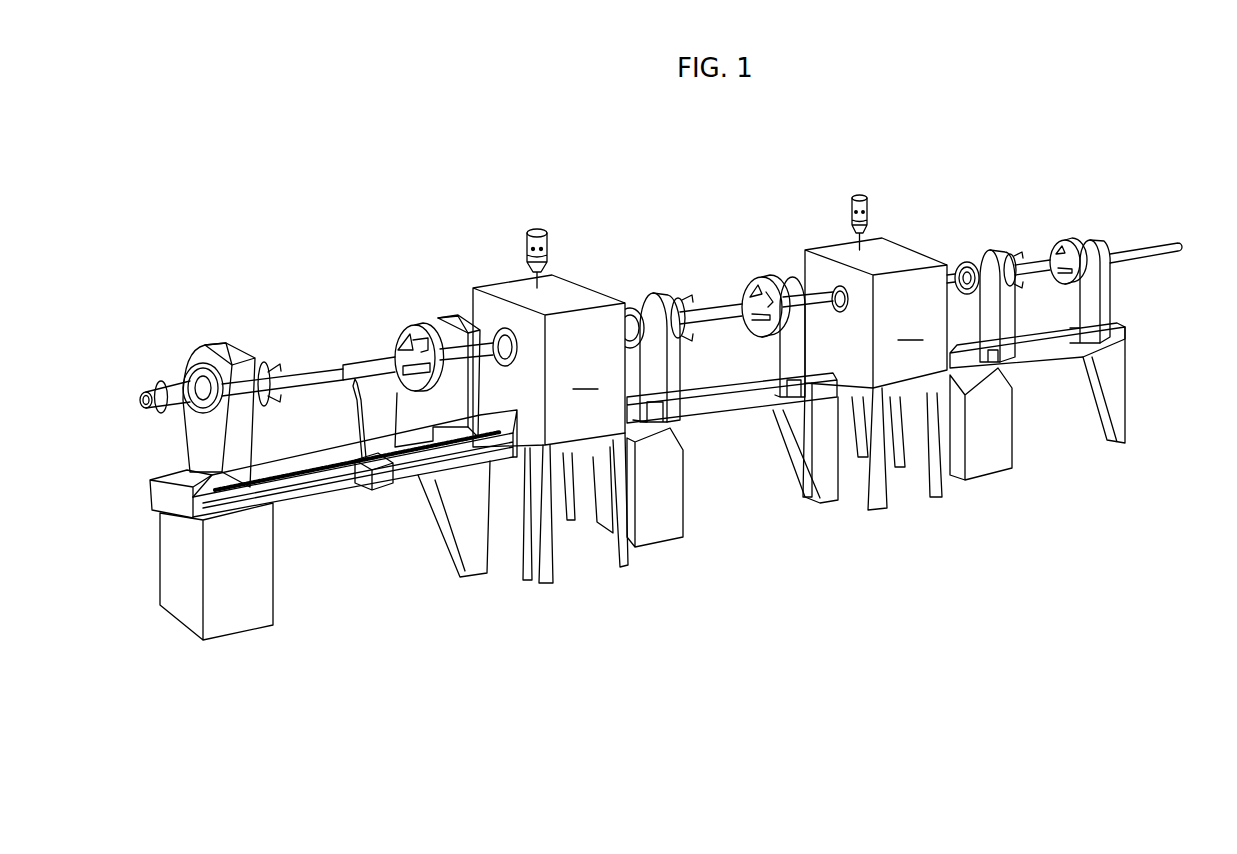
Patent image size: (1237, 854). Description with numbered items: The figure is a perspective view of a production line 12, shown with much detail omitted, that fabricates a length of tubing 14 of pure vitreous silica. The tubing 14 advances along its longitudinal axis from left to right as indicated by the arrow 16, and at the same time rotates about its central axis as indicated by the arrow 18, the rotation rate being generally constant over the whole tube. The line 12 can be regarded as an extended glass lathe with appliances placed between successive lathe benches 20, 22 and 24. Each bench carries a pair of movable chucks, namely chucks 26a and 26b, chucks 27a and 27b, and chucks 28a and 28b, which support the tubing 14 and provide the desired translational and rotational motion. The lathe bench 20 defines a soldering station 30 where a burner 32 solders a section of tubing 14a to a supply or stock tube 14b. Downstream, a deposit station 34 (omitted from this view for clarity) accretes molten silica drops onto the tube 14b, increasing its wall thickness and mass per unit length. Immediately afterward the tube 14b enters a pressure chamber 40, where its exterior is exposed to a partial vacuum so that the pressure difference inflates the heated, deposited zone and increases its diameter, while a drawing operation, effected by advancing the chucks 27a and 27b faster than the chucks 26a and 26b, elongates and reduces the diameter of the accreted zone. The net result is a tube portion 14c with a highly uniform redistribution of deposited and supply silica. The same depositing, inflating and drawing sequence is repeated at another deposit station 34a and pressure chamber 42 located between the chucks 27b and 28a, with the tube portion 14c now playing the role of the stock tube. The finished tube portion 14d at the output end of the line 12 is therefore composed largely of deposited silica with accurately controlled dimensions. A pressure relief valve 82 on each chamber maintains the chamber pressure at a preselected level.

The production line 12 is at (480, 230).
The tubing 14 is at (1157, 233).
The section of tubing 14a is at (330, 380).
The supply or stock tube 14b is at (377, 352).
The tube portion 14c is at (727, 327).
The finished tube portion 14d is at (1028, 260).
The arrow 16 is at (735, 268).
The arrow 18 is at (170, 393).
The lathe bench 20 is at (275, 568).
The lathe bench 22 is at (687, 487).
The lathe bench 24 is at (1013, 427).
The chuck 26a is at (212, 343).
The chuck 26b is at (437, 317).
The chuck 27a is at (640, 292).
The chuck 27b is at (782, 270).
The chuck 28a is at (977, 247).
The chuck 28b is at (1082, 240).
The soldering station 30 is at (327, 355).
The burner 32 is at (360, 386).
The deposit station 34 is at (483, 330).
The deposit station 34a is at (820, 283).
The pressure chamber 40 is at (550, 429).
The pressure chamber 42 is at (875, 374).
The pressure relief valve 82 is at (547, 243).